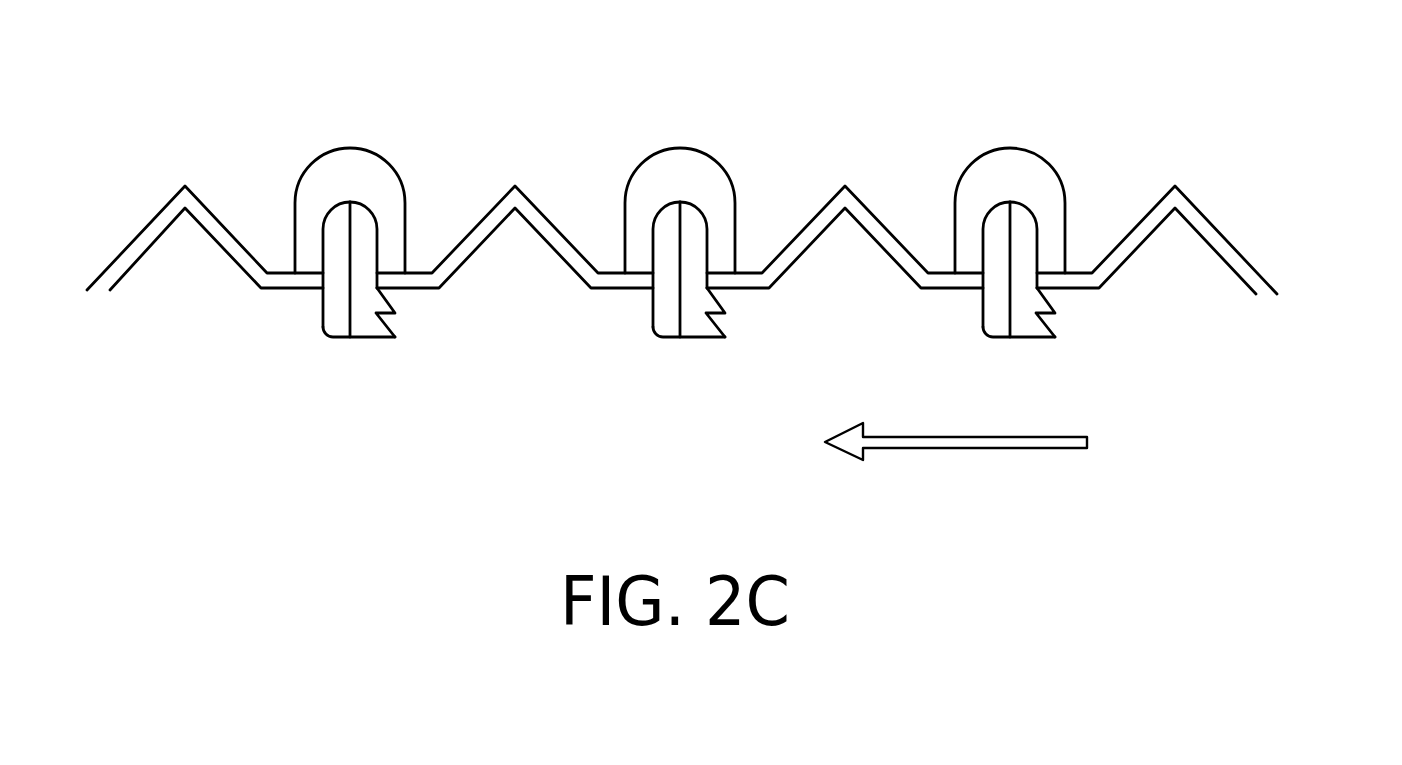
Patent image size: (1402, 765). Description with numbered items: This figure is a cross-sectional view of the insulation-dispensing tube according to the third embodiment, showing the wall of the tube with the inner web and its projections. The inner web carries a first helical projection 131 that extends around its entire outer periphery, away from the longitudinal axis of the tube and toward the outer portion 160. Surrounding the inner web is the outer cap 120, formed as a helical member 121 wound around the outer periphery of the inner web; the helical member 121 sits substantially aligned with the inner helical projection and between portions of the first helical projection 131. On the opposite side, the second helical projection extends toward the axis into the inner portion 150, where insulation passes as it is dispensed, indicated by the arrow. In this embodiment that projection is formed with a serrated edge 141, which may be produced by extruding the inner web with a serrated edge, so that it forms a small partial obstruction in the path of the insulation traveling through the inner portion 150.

The outer cap 120 is at (373, 173).
The helical member 121 is at (972, 163).
The first helical projection 131 is at (220, 217).
The serrated edge 141 is at (637, 330).
The inner portion 150 is at (1143, 327).
The outer portion 160 is at (1228, 197).